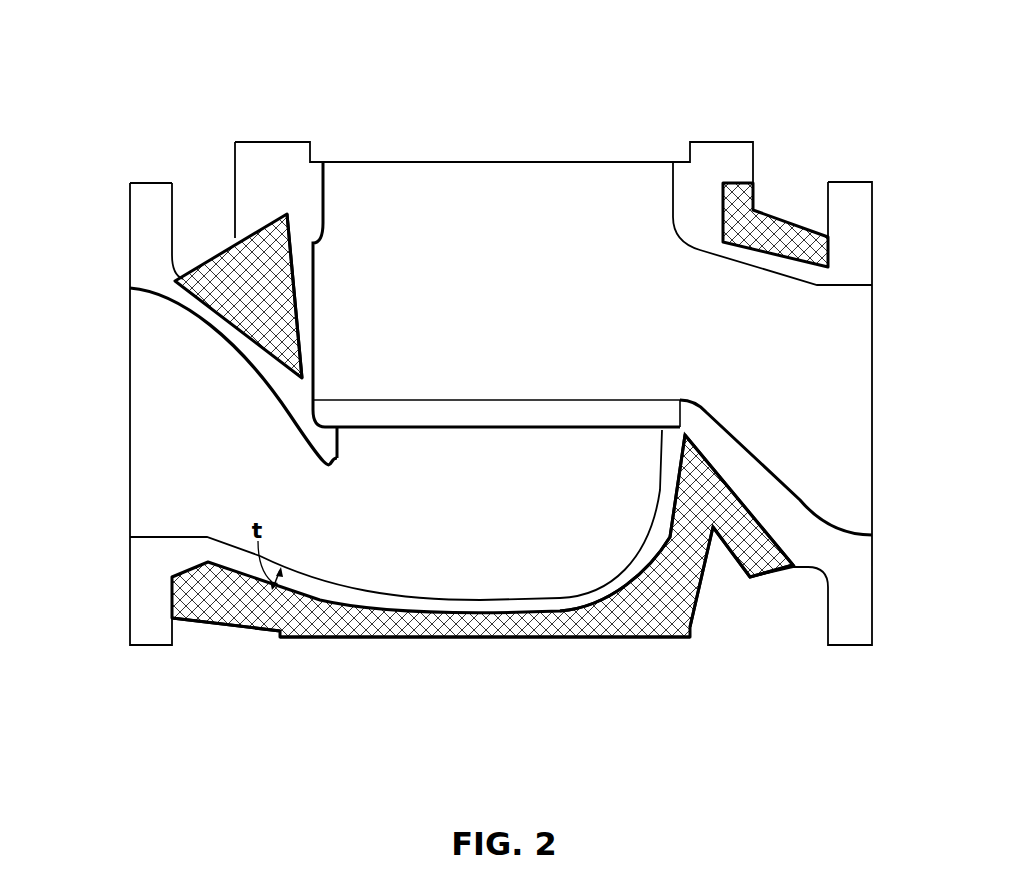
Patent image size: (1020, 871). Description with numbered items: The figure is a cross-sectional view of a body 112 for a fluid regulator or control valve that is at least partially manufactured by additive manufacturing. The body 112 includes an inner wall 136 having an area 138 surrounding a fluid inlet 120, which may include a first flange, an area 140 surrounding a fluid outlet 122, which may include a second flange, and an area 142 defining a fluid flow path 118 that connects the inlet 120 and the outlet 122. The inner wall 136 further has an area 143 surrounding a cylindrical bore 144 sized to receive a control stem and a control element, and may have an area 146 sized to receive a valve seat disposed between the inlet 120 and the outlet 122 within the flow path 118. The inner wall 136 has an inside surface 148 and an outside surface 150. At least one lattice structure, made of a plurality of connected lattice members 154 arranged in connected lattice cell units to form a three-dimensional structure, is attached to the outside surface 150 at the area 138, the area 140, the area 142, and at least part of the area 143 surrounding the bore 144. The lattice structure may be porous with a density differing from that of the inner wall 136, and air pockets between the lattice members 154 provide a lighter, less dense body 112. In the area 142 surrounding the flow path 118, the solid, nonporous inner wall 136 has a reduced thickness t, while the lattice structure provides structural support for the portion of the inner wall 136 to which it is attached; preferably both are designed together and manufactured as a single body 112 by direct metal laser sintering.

The body 112 is at (251, 60).
The fluid flow path 118 is at (676, 292).
The fluid inlet 120 is at (128, 440).
The fluid outlet 122 is at (873, 358).
The inner wall 136 is at (148, 243).
The area surrounding the fluid inlet 138 is at (252, 680).
The area surrounding the fluid outlet 140 is at (733, 680).
The area defining the fluid flow path 142 is at (587, 595).
The area surrounding the cylindrical bore 143 is at (294, 290).
The cylindrical bore 144 is at (314, 251).
The area sized to receive a valve seat 146 is at (672, 410).
The inside surface 148 is at (338, 582).
The outside surface 150 is at (325, 600).
The lattice members 154 is at (432, 637).